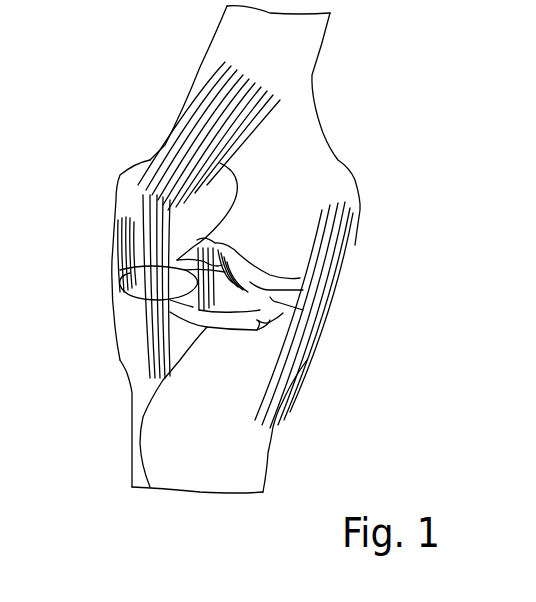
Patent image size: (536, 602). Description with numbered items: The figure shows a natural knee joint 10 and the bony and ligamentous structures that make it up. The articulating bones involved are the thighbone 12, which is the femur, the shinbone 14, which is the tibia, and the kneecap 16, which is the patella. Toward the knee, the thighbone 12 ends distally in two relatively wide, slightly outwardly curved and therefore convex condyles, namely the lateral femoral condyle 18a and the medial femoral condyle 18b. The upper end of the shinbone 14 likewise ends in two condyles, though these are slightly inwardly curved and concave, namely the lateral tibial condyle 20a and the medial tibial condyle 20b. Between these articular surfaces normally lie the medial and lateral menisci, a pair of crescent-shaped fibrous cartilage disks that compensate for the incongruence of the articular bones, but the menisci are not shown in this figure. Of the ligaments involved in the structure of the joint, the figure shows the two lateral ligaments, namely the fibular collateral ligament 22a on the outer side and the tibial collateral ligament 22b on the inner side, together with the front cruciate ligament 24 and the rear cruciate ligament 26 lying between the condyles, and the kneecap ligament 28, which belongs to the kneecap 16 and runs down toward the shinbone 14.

The natural knee joint 10 is at (165, 93).
The thighbone 12 is at (298, 135).
The shinbone 14 is at (240, 440).
The kneecap 16 is at (130, 187).
The Condylus lateralis femoris 18a is at (270, 298).
The Condylus medialis femoris 18b is at (220, 288).
The Condylus lateralis tibiae 20a is at (270, 320).
The Condylus medialis tibiae 20b is at (220, 321).
The Ligamentum collaterale fibulare 22a is at (340, 290).
The Ligamentum collaterale tibiale 22b is at (127, 253).
The front cruciate ligament 24 is at (183, 360).
The rear cruciate ligament 26 is at (250, 280).
The kneecap ligament 28 is at (165, 165).